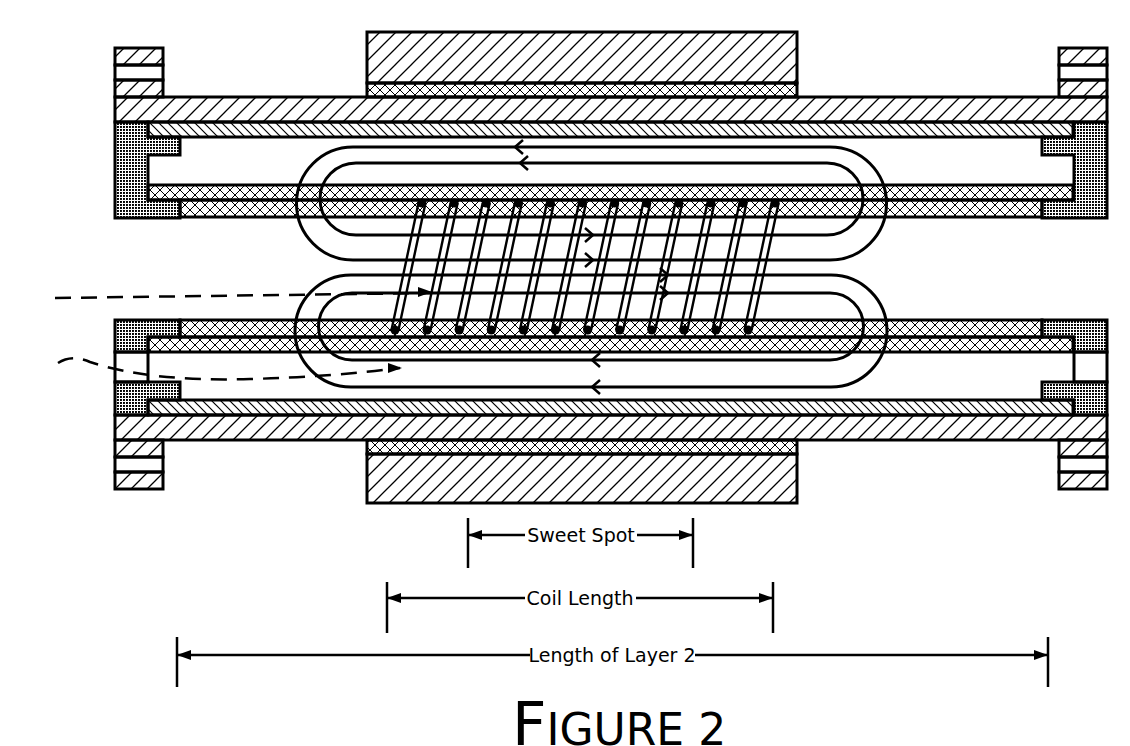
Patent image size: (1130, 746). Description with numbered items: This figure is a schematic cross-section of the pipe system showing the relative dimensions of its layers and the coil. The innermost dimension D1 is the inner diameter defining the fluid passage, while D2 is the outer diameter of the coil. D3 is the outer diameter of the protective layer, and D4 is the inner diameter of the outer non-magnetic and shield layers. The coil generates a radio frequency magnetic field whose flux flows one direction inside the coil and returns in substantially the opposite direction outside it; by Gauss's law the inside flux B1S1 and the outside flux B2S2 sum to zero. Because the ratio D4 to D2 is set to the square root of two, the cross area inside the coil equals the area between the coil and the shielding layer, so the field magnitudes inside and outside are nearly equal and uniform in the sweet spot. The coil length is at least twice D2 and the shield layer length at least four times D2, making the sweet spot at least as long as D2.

The inner diameter D1 is at (995, 217).
The outer diameter of the coil D2 is at (947, 200).
The outer diameter of the protective layer D3 is at (282, 186).
The inner diameter of the non-magnetic pipe D4 is at (198, 137).
The magnetic flux inside the coil B1S1 is at (600, 209).
The magnetic flux outside the coil B2S2 is at (493, 331).